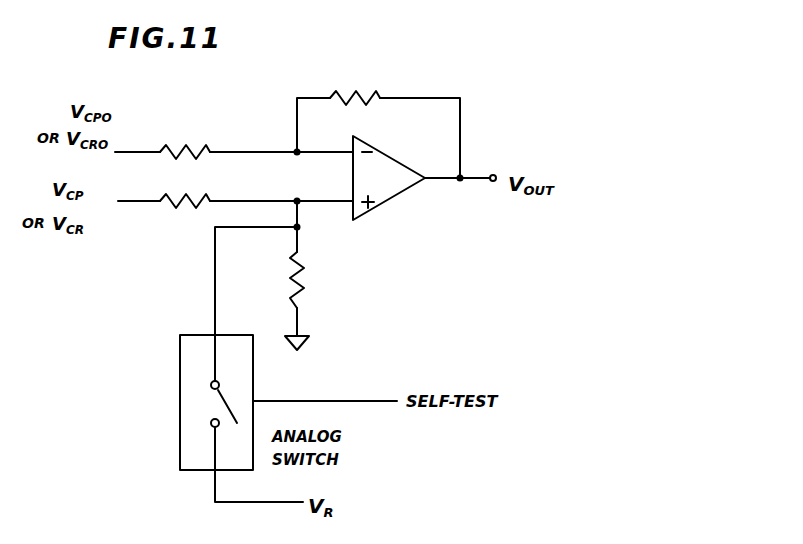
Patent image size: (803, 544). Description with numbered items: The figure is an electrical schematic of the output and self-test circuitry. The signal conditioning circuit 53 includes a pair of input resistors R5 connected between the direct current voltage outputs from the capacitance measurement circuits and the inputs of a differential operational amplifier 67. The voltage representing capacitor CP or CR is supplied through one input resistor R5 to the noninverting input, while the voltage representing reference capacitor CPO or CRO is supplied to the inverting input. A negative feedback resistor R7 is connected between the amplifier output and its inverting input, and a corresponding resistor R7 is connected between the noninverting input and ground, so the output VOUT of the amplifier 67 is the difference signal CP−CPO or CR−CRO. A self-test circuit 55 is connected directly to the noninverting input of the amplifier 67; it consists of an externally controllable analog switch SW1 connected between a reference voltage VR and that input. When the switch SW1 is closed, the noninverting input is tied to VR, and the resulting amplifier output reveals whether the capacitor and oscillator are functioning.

The input resistor R5 is at (195, 147).
The feedback resistor R7 is at (362, 92).
The differential operational amplifier 67 is at (391, 200).
The signal conditioning circuit 53 is at (198, 250).
The self-test circuit 55 is at (180, 390).
The analog switch SW1 is at (222, 386).